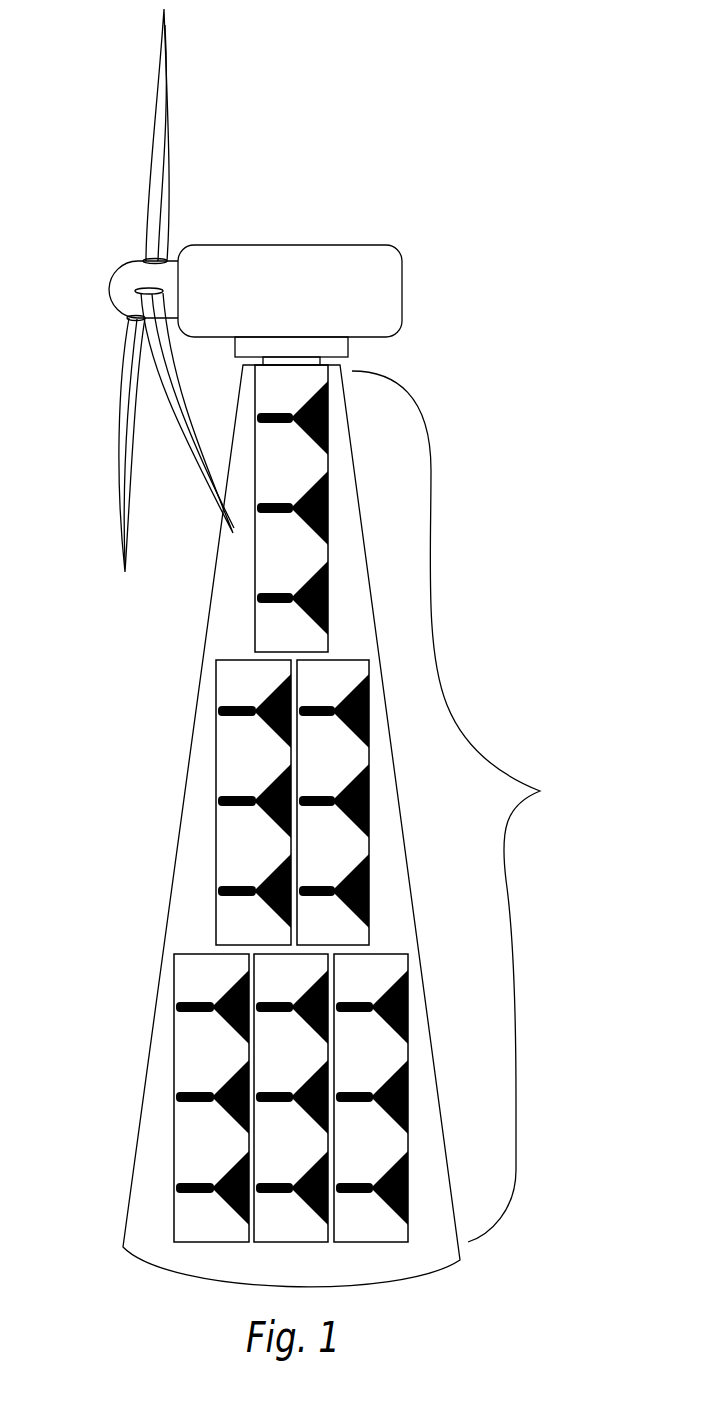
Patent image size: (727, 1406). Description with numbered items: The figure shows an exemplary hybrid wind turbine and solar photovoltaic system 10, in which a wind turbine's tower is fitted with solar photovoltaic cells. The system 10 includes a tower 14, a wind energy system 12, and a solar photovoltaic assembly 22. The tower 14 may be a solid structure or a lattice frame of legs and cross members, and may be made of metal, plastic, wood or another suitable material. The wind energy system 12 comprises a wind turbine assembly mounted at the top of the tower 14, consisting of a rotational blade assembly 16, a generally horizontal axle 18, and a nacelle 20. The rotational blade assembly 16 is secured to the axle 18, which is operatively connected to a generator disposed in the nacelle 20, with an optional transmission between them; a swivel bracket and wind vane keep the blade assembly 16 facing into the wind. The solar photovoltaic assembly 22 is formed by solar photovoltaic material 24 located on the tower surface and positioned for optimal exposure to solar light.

The hybrid wind turbine and solar photovoltaic system 10 is at (338, 648).
The wind energy system 12 is at (251, 290).
The tower 14 is at (160, 801).
The rotational blade assembly 16 is at (160, 136).
The axle 18 is at (111, 284).
The nacelle 20 is at (387, 274).
The solar photovoltaic assembly 22 is at (365, 803).
The solar photovoltaic material 24 is at (235, 681).